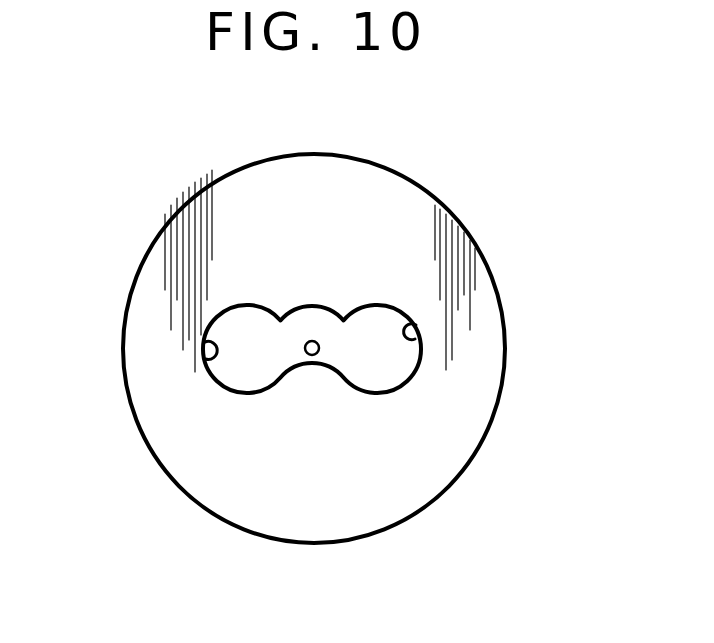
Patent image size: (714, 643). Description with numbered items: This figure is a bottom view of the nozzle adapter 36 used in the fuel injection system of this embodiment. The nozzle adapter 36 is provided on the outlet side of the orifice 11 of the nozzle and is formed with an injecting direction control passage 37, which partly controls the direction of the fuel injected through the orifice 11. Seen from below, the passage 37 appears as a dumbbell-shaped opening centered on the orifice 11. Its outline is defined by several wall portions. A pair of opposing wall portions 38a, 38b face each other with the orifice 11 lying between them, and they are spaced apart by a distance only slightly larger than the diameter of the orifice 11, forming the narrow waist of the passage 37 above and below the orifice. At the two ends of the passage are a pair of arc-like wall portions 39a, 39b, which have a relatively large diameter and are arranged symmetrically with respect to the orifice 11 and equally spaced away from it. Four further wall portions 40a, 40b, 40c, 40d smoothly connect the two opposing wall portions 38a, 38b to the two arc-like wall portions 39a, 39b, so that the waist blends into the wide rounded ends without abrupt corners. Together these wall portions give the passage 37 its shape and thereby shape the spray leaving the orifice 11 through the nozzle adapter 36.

The nozzle adapter 36 is at (418, 200).
The injecting direction control passage 37 is at (389, 359).
The orifice 11 is at (320, 348).
The opposing wall portion 38a is at (310, 333).
The opposing wall portion 38b is at (312, 363).
The arc-like wall portion 39a is at (205, 345).
The arc-like wall portion 39b is at (415, 340).
The connecting wall portion 40a is at (286, 330).
The connecting wall portion 40b is at (336, 322).
The connecting wall portion 40c is at (289, 374).
The connecting wall portion 40d is at (341, 373).